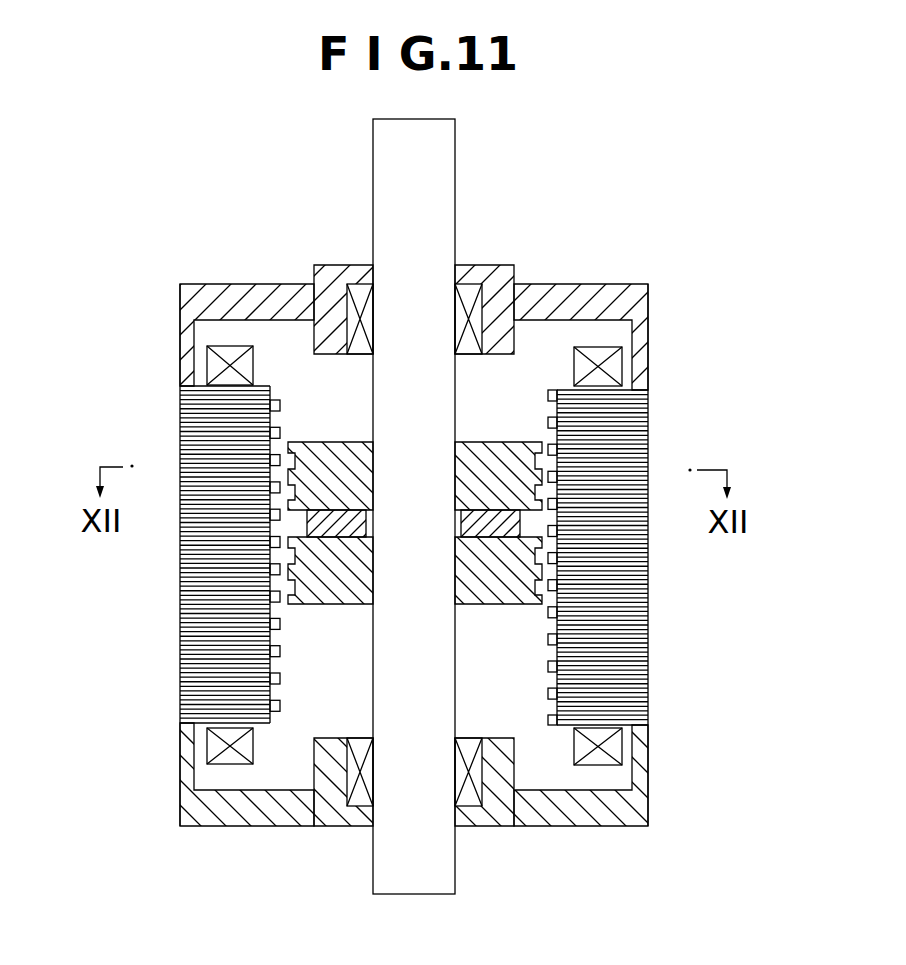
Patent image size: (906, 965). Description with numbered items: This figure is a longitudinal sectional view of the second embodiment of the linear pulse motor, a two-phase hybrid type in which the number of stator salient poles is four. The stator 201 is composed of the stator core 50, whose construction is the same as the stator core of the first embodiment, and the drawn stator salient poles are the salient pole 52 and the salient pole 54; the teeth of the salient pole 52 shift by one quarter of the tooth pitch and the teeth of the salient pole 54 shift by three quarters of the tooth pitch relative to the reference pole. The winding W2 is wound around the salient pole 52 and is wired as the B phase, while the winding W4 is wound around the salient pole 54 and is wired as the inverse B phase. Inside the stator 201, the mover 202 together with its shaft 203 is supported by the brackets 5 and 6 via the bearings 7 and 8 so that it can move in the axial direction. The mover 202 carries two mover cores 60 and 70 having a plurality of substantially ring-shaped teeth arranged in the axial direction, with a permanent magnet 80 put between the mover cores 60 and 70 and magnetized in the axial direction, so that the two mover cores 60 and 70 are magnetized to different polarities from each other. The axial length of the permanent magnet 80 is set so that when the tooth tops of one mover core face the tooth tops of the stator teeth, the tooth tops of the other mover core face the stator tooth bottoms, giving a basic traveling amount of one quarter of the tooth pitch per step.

The shaft 203 is at (373, 196).
The stator 201 is at (263, 281).
The bracket 5 is at (597, 297).
The bracket 6 is at (593, 818).
The bearing 7 is at (469, 292).
The bearing 8 is at (468, 796).
The winding W4 is at (217, 365).
The winding W2 is at (613, 365).
The salient pole 54 is at (202, 578).
The salient pole 52 is at (610, 613).
The stator core 50 is at (653, 555).
The mover 202 is at (333, 436).
The mover core 60 is at (498, 437).
The mover core 70 is at (488, 618).
The permanent magnet 80 is at (510, 524).